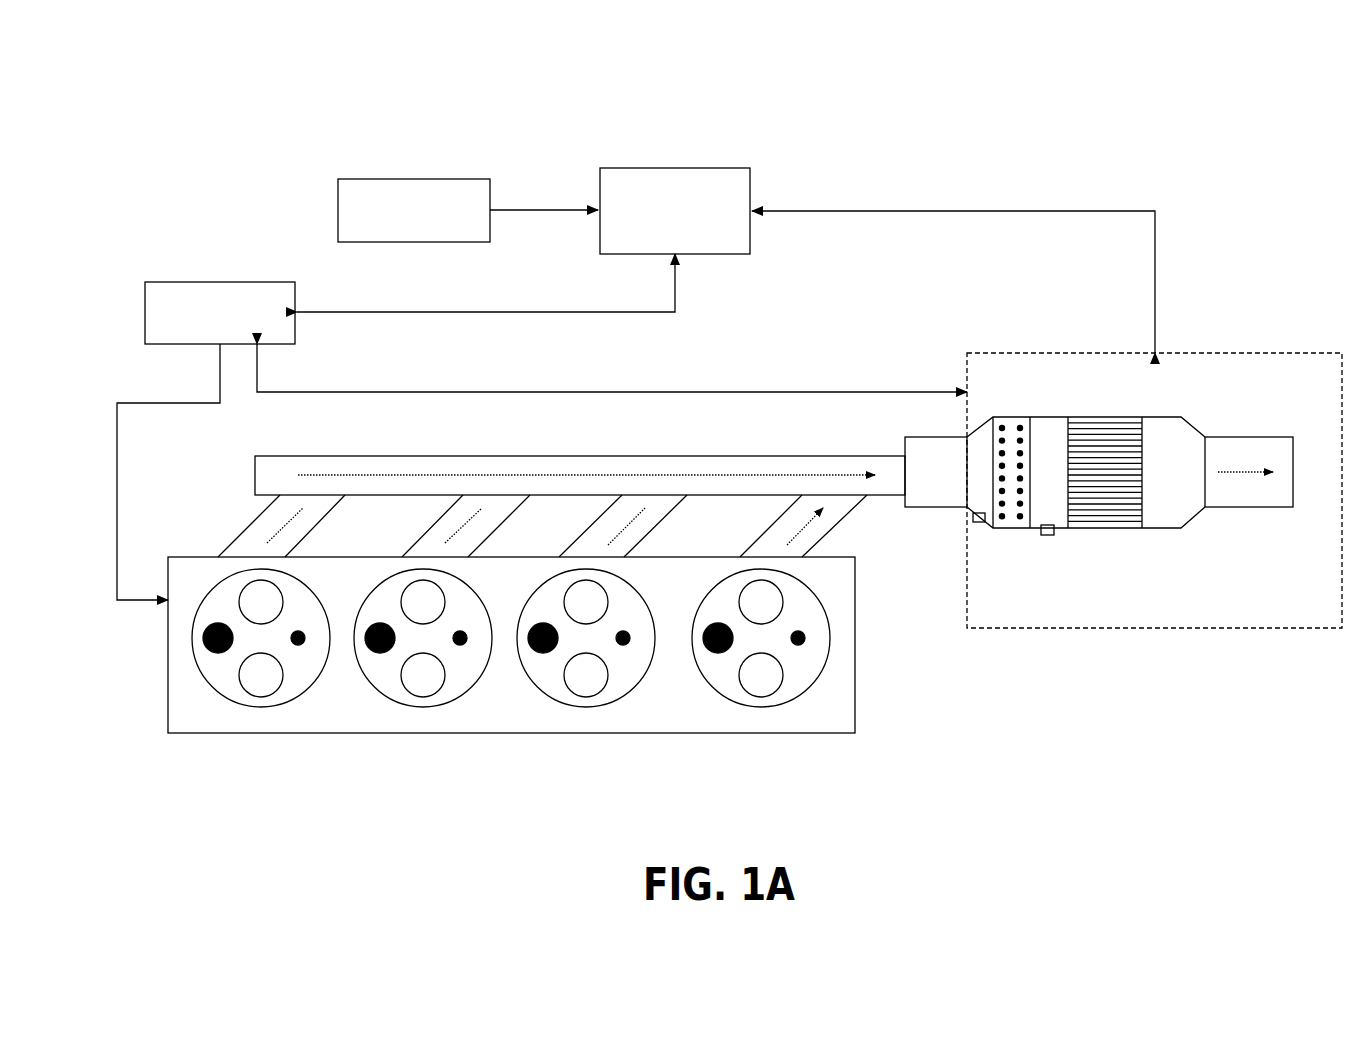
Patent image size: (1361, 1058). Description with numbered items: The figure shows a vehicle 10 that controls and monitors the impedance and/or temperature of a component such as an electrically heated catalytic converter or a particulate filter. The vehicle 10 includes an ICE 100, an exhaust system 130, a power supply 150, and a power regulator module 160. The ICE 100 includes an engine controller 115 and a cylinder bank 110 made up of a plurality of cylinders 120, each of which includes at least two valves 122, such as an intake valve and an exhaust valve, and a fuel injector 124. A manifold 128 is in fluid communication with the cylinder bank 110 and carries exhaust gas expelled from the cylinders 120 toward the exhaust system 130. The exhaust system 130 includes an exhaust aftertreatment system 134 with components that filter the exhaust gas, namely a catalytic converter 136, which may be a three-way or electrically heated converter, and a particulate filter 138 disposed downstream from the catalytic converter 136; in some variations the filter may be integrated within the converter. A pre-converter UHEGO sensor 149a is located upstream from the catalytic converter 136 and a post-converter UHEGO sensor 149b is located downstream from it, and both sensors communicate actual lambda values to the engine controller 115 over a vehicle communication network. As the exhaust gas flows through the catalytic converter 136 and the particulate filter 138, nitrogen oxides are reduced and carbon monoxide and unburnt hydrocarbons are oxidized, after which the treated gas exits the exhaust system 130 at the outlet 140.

The vehicle 10 is at (1158, 102).
The ICE 100 is at (173, 755).
The cylinder bank 110 is at (153, 645).
The engine controller 115 is at (297, 290).
The cylinder 120 is at (362, 667).
The valves 122 is at (423, 622).
The fuel injector 124 is at (380, 650).
The manifold 128 is at (420, 457).
The exhaust system 130 is at (922, 354).
The exhaust aftertreatment system 134 is at (1230, 353).
The catalytic converter 136 is at (1016, 528).
The particulate filter 138 is at (1093, 522).
The outlet 140 is at (1258, 437).
The pre-converter UHEGO sensor 149a is at (985, 523).
The post-converter UHEGO sensor 149b is at (1048, 535).
The power supply 150 is at (492, 183).
The power regulator module 160 is at (752, 172).